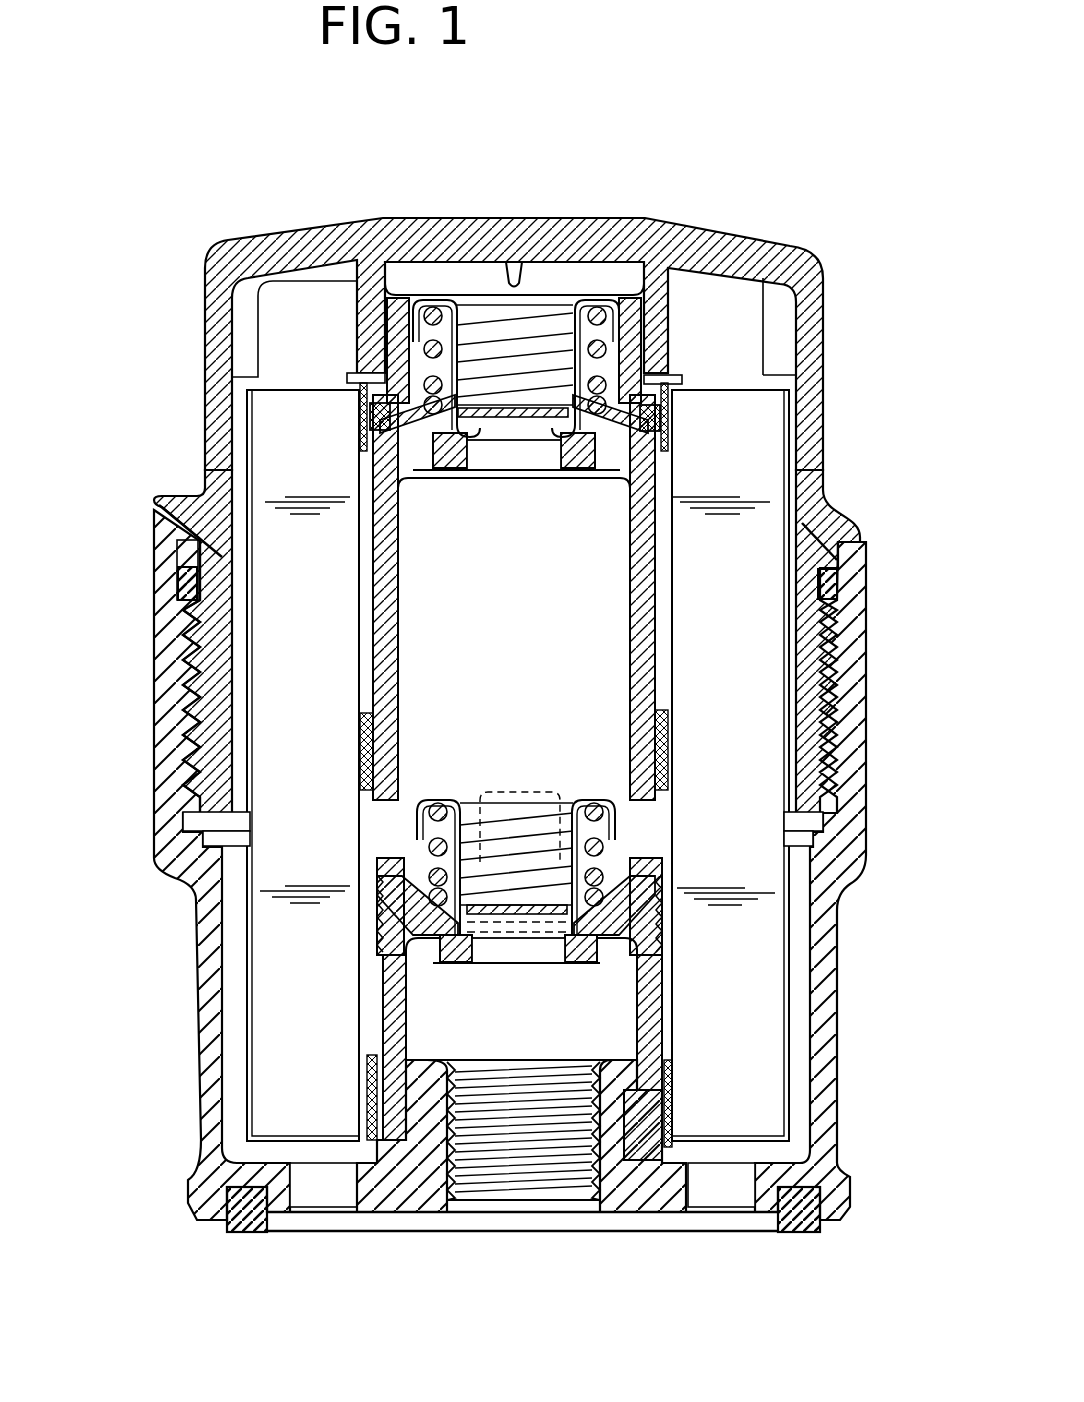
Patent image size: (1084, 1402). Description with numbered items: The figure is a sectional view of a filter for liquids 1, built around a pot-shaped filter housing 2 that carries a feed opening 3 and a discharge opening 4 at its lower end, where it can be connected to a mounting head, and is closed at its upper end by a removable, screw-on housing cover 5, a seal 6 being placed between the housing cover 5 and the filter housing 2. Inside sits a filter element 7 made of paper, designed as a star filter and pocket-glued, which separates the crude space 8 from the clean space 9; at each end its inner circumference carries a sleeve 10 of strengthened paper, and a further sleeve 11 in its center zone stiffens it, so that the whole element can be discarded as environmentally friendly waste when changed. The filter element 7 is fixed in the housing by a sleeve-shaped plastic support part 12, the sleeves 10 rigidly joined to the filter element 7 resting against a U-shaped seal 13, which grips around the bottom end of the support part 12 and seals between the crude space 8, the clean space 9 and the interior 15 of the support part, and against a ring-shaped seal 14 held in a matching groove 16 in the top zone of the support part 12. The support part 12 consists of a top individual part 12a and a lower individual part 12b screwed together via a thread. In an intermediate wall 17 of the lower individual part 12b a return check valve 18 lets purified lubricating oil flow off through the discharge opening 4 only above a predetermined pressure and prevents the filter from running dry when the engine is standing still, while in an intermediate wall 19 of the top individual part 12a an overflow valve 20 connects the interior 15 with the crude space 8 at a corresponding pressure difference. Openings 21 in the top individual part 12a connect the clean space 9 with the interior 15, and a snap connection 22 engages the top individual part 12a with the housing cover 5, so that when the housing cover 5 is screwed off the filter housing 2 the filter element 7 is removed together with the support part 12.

The filter for liquids 1 is at (175, 988).
The filter housing 2 is at (830, 870).
The feed opening 3 is at (320, 1190).
The discharge opening 4 is at (502, 1175).
The housing cover 5 is at (805, 428).
The seal 6 is at (832, 585).
The filter element 7 is at (755, 968).
The crude space 8 is at (800, 1048).
The clean space 9 is at (380, 1018).
The sleeve 10 is at (668, 402).
The sleeve 11 is at (668, 725).
The support part 12 is at (373, 590).
The top individual part 12a is at (383, 681).
The lower individual part 12b is at (392, 981).
The seal 13 is at (637, 1155).
The seal 14 is at (662, 425).
The interior 15 is at (533, 571).
The groove 16 is at (372, 412).
The intermediate wall 17 is at (615, 925).
The return check valve 18 is at (470, 798).
The intermediate wall 19 is at (435, 426).
The overflow valve 20 is at (580, 447).
The openings 21 is at (618, 792).
The snap connection 22 is at (388, 318).